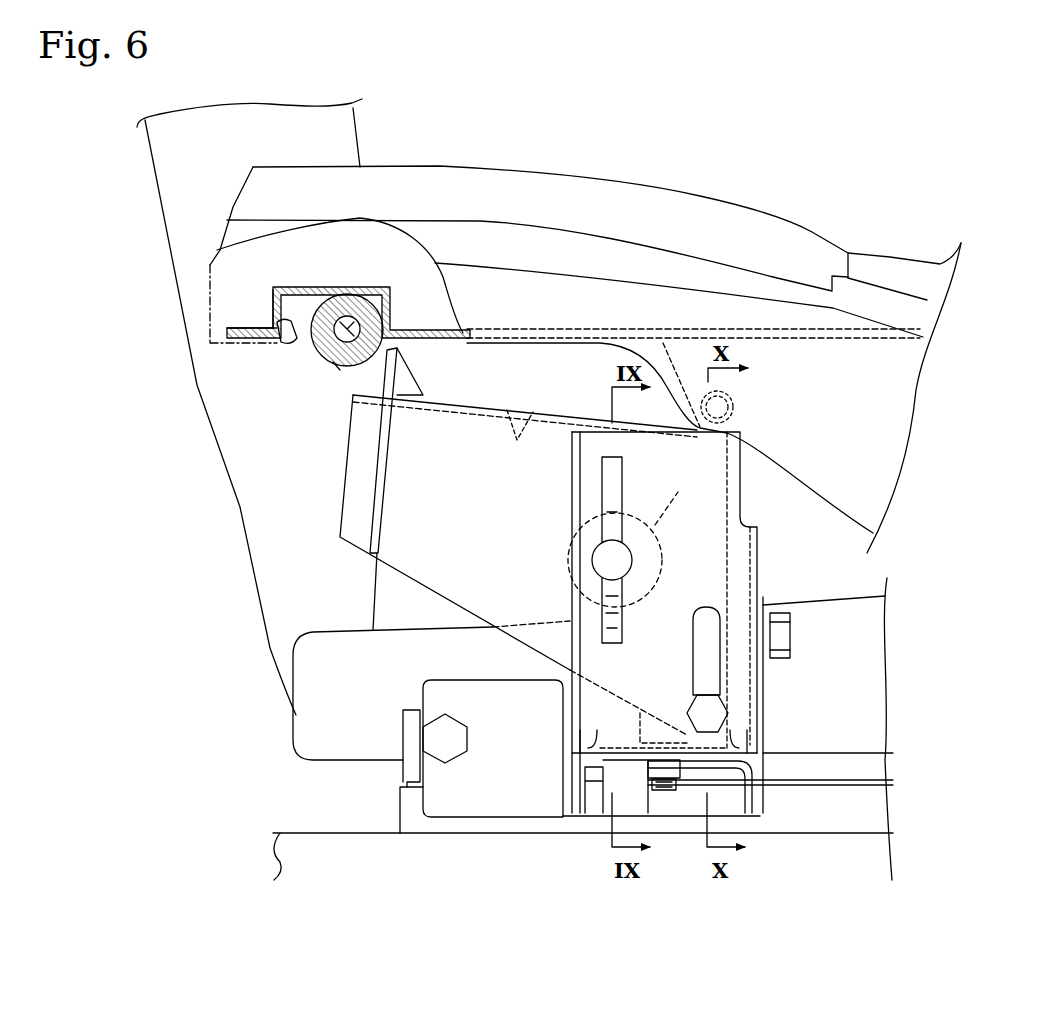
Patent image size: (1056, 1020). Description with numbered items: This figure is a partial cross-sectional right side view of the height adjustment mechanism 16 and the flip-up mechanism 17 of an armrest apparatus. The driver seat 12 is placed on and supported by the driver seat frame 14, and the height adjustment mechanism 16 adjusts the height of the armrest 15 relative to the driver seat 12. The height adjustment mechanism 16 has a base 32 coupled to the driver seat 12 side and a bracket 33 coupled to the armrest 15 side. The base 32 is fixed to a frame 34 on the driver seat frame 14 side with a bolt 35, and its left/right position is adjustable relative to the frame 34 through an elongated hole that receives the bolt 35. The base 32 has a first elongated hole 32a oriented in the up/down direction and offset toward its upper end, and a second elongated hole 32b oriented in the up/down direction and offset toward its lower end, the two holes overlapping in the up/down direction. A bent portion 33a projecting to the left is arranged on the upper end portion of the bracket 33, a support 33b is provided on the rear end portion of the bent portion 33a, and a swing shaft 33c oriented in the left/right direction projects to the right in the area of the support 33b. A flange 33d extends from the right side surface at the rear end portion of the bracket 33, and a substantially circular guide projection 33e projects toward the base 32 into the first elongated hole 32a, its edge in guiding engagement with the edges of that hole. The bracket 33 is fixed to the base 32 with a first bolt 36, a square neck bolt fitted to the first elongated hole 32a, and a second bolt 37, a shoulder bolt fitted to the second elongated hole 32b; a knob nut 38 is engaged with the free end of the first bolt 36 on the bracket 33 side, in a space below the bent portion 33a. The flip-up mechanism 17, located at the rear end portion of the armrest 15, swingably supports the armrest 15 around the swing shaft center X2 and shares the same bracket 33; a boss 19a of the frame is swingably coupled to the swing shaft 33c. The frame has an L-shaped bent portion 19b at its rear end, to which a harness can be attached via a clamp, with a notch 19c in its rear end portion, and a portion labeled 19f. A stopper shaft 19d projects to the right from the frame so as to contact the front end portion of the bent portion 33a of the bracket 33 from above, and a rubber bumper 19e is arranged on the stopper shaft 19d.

The driver seat 12 is at (347, 124).
The driver seat frame 14 is at (410, 820).
The armrest 15 is at (693, 193).
The height adjustment mechanism 16 is at (564, 516).
The flip-up mechanism 17 is at (305, 365).
The boss 19a is at (409, 320).
The bent portion 19b is at (250, 318).
The notch 19c is at (245, 338).
The stopper shaft 19d is at (735, 405).
The rubber bumper 19e is at (728, 393).
The tab 19f is at (283, 323).
The swing shaft center X2 is at (352, 322).
The base 32 is at (760, 565).
The first elongated hole 32a is at (612, 490).
The second elongated hole 32b is at (697, 648).
The bracket 33 is at (420, 582).
The bent portion 33a is at (532, 418).
The support 33b is at (410, 388).
The swing shaft 33c is at (346, 340).
The flange 33d is at (390, 492).
The guide projection 33e is at (613, 622).
The frame 34 is at (745, 796).
The bolt 35 is at (794, 637).
The first bolt 36 is at (600, 562).
The second bolt 37 is at (722, 713).
The knob nut 38 is at (638, 541).